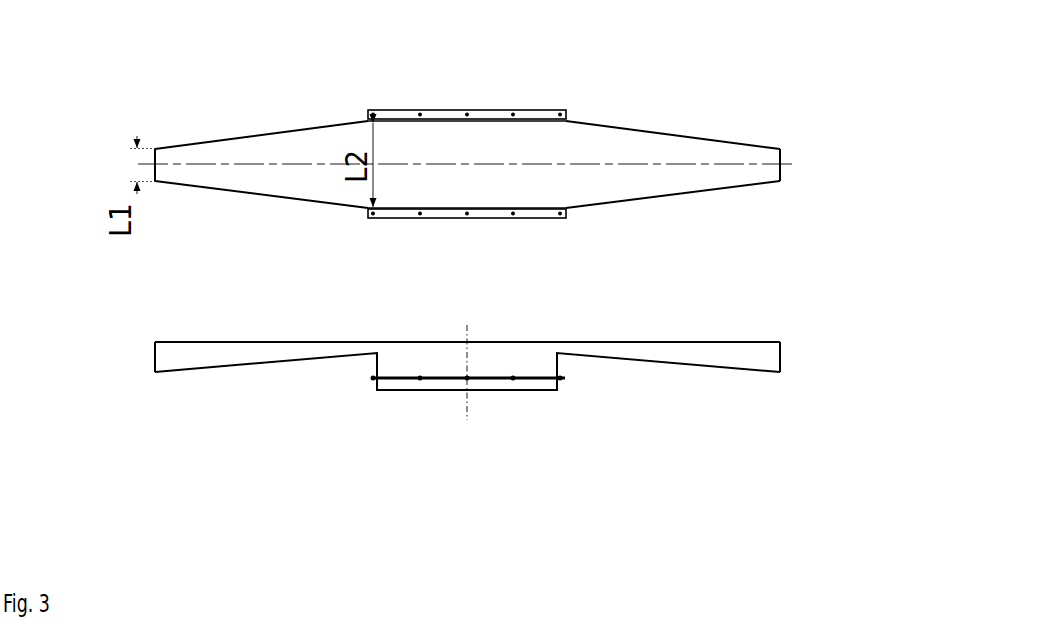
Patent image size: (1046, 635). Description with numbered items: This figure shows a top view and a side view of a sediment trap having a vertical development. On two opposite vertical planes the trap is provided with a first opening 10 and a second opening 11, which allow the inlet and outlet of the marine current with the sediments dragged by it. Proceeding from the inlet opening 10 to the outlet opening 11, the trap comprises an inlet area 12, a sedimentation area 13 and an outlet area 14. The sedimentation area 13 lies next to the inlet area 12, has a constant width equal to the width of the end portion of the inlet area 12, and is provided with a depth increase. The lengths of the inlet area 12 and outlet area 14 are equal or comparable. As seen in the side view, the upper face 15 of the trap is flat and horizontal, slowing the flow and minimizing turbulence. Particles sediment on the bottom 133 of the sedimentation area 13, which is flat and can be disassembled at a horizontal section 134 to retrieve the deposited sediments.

The first opening 10 is at (148, 147).
The second opening 11 is at (782, 153).
The inlet area 12 is at (228, 139).
The sedimentation area 13 is at (477, 142).
The outlet area 14 is at (643, 150).
The upper face 15 is at (483, 342).
The bottom 133 is at (490, 392).
The horizontal section 134 is at (370, 379).